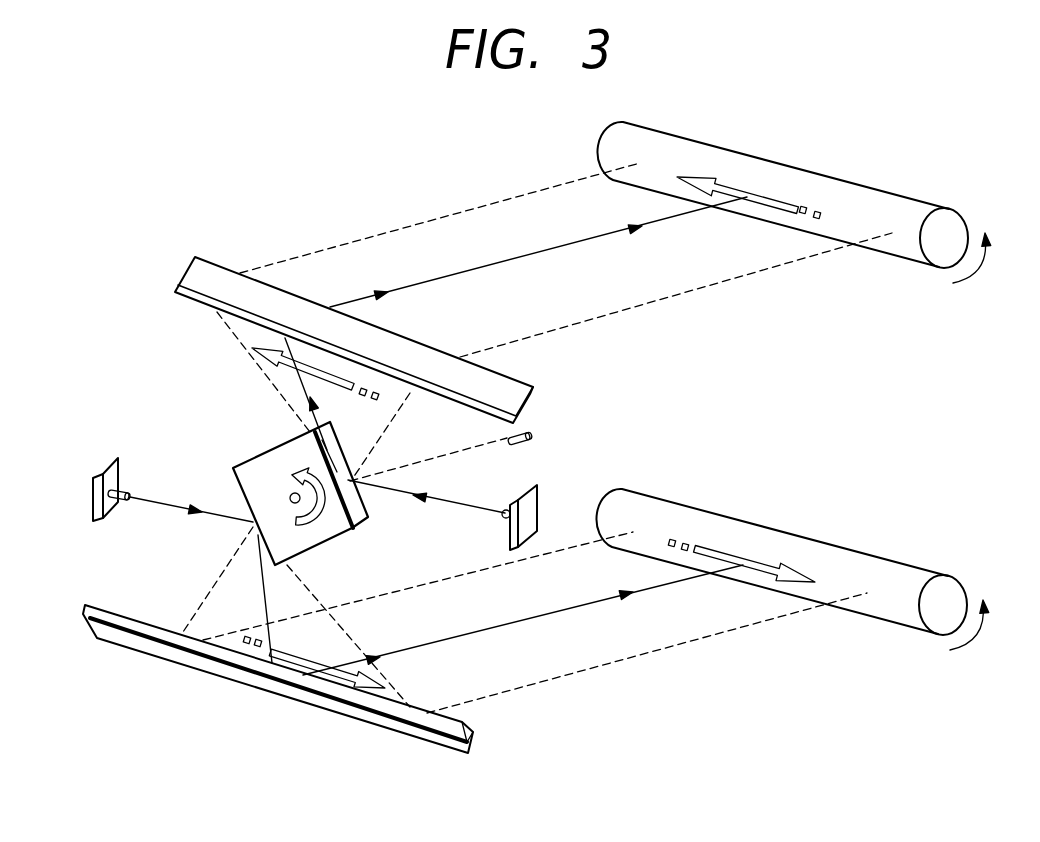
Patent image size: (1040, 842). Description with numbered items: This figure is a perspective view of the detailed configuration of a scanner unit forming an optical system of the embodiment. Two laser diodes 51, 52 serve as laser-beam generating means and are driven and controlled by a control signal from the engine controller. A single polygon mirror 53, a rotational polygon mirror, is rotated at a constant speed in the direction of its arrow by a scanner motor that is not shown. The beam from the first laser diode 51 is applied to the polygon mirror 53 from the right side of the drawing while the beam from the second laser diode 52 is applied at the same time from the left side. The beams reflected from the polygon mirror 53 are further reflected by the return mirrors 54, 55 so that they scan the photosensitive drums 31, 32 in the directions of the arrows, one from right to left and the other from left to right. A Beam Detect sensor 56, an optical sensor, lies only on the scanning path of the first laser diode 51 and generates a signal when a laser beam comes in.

The photosensitive drum 31 is at (868, 184).
The photosensitive drum 32 is at (865, 550).
The laser diode (LD1) 51 is at (537, 505).
The laser diode (LD2) 52 is at (93, 497).
The polygon mirror 53 is at (333, 538).
The return mirror 54 is at (523, 382).
The return mirror 55 is at (405, 738).
The Beam Detect (BD) sensor 56 is at (532, 437).